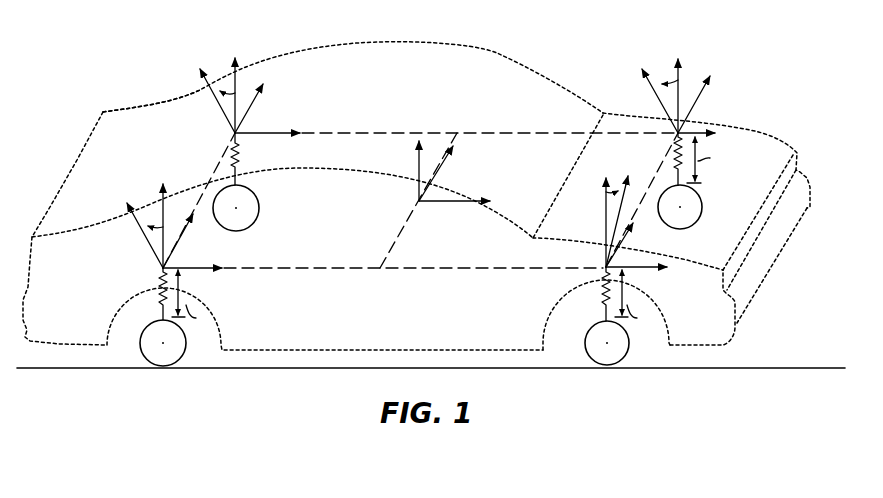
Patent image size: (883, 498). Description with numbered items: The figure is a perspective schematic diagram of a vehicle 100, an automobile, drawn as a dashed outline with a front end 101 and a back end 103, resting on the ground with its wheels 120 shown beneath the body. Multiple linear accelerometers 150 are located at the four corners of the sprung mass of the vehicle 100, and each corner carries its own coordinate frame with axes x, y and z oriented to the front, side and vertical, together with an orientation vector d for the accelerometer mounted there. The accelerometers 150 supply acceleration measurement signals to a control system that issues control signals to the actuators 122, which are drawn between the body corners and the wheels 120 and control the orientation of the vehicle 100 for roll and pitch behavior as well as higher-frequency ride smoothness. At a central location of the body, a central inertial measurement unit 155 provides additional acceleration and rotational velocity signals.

The vehicle 100 is at (124, 46).
The front end 101 is at (793, 206).
The back end 103 is at (154, 133).
The wheel 120 is at (186, 351).
The actuators 122 is at (160, 298).
The linear accelerometers 150 is at (157, 264).
The central inertial measurement unit 155 is at (422, 206).